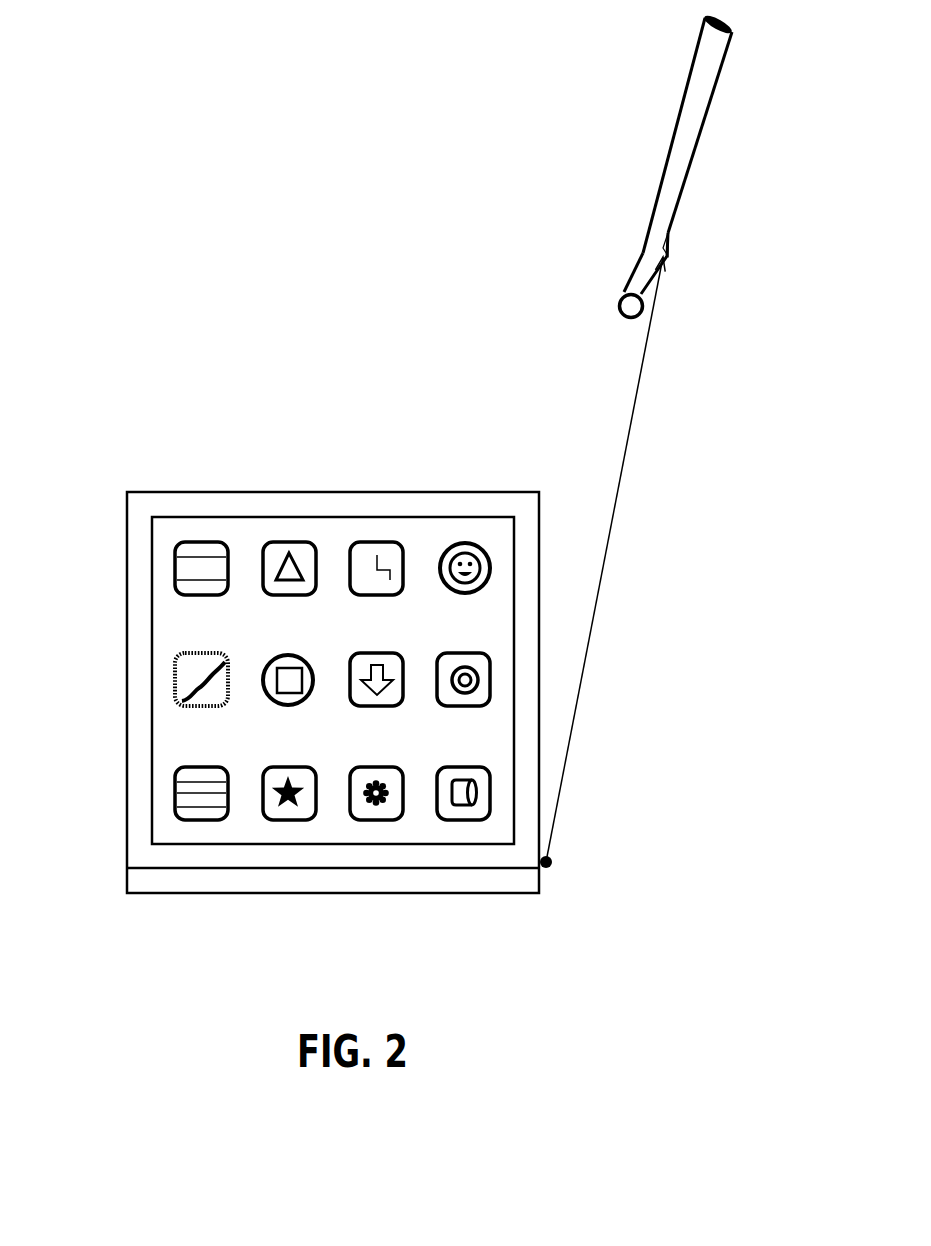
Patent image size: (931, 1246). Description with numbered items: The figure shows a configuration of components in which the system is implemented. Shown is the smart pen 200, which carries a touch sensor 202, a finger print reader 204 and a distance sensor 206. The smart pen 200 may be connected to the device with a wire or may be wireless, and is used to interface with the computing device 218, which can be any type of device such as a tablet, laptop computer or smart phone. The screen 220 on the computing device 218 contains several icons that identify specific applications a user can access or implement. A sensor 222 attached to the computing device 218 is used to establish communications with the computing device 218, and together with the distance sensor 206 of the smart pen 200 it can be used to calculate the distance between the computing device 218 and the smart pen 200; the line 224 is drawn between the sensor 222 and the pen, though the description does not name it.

The smart pen 200 is at (668, 144).
The touch sensor 202 is at (618, 305).
The finger print reader 204 is at (642, 255).
The distance sensor 206 is at (678, 243).
The computing device 218 is at (127, 581).
The screen 220 is at (175, 681).
The sensor 222 is at (546, 862).
The direction arrow 224 is at (612, 530).